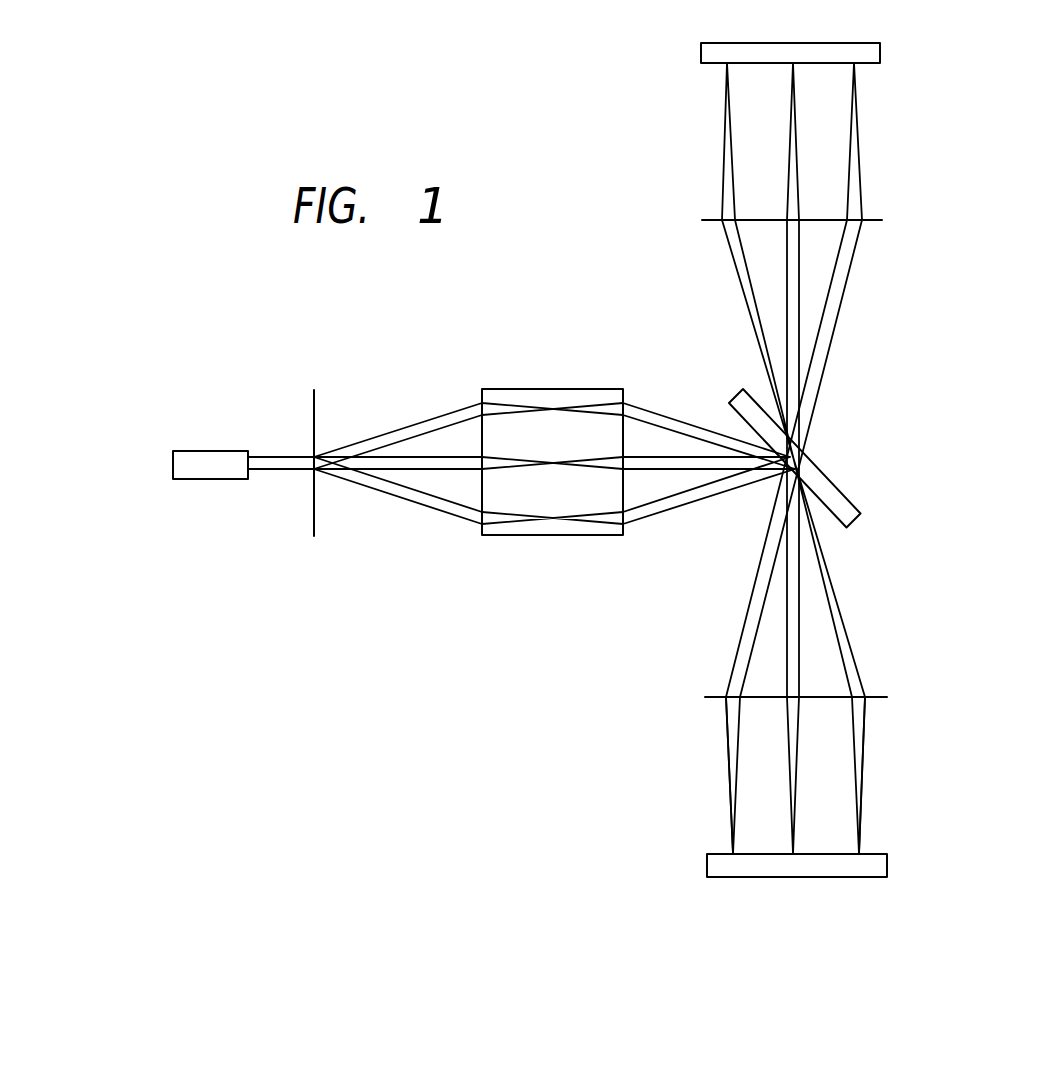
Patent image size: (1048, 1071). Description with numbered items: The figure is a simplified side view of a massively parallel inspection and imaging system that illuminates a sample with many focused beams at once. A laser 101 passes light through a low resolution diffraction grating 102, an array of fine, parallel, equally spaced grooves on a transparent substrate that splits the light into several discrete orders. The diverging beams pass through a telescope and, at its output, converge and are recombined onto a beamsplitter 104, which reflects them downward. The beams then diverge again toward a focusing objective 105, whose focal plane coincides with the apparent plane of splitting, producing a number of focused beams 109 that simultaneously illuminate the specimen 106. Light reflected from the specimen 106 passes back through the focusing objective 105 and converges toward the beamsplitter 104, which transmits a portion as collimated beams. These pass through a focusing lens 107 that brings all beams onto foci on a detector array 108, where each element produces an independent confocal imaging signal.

The laser 101 is at (211, 451).
The low resolution diffraction grating 102 is at (314, 512).
The beamsplitter 104 is at (838, 489).
The focusing objective 105 is at (877, 697).
The specimen 106 is at (887, 863).
The focusing lens 107 is at (868, 220).
The detector array 108 is at (880, 50).
The focused beams 109 is at (906, 734).